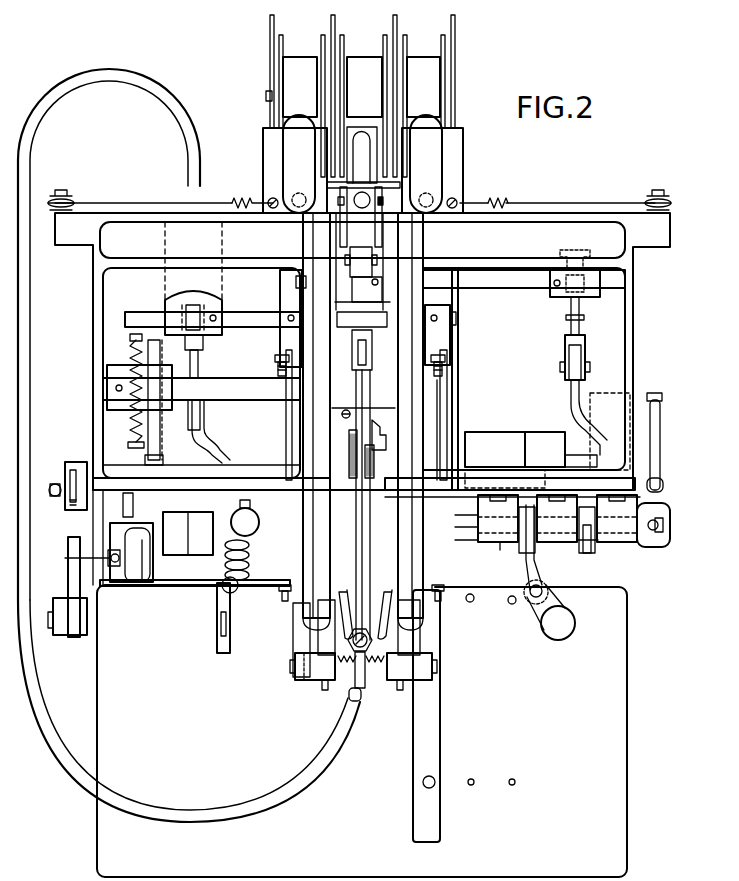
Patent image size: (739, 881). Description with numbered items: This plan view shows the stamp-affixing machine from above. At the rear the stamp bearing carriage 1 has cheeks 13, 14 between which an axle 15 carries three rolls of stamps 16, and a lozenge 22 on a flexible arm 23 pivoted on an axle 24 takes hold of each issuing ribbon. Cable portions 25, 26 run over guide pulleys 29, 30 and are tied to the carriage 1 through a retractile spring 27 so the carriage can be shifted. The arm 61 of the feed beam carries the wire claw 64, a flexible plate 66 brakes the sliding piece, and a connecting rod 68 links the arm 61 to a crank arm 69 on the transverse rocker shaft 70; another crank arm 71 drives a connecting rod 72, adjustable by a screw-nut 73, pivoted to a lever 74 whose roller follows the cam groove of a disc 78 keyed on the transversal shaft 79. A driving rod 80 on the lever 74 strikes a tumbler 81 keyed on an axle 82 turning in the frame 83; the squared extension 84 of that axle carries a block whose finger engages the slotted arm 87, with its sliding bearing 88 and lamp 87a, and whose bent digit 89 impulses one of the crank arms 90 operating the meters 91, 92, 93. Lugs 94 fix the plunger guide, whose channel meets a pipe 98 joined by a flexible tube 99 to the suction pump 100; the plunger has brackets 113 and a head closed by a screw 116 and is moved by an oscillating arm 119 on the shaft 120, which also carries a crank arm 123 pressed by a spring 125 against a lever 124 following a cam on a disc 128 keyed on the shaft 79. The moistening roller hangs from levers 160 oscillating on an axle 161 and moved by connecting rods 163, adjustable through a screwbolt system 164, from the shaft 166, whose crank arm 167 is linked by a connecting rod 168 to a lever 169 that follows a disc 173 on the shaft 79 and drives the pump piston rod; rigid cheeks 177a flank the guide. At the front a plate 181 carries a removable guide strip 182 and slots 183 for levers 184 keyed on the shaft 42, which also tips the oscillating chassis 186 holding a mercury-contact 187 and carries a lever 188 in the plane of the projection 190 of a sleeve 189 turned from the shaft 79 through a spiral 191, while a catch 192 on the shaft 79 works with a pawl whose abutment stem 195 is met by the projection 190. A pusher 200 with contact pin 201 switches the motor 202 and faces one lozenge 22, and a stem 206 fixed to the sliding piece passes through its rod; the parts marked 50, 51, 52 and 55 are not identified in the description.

The stamp bearing carriage 1 is at (274, 335).
The cheek 13 is at (270, 50).
The cheek 14 is at (456, 52).
The axle 15 is at (266, 96).
The rolls of stamps 16 is at (361, 87).
The lozenge 22 is at (299, 193).
The flexible arm 23 is at (362, 164).
The axle 24 is at (300, 120).
The cable portion 25 is at (106, 203).
The cable portion 26 is at (556, 203).
The retractile spring 27 is at (241, 200).
The guide pulley 29 is at (60, 194).
The guide pulley 30 is at (650, 196).
The shaft 42 is at (55, 615).
The bar 50 is at (226, 580).
The spring 51 is at (221, 551).
The spring 52 is at (223, 562).
The roller 55 is at (231, 512).
The arm 61 is at (361, 425).
The claw 64 is at (352, 465).
The flexible plate 66 is at (373, 422).
The connecting rod 68 is at (362, 306).
The crank arm 69 is at (368, 258).
The rocker shaft 70 is at (290, 280).
The crank arm 71 is at (584, 273).
The connecting rod 72 is at (585, 355).
The screw-nut 73 is at (585, 320).
The lever 74 is at (580, 390).
The disc 78 is at (597, 431).
The transversal shaft 79 is at (53, 486).
The driving rod 80 is at (648, 393).
The tumbler 81 is at (663, 485).
The axle 82 is at (658, 542).
The frame 83 is at (557, 480).
The squared extension 84 is at (486, 527).
The slotted arm 87 is at (530, 552).
The lamp 87a is at (558, 630).
The bearing 88 is at (486, 472).
The bent digit 89 is at (581, 555).
The crank arms 90 is at (526, 550).
The meter 91 is at (497, 551).
The meter 92 is at (555, 542).
The meter 93 is at (615, 542).
The lugs 94 is at (310, 490).
The pipe 98 is at (355, 702).
The flexible tube 99 is at (112, 68).
The suction pump 100 is at (193, 301).
The brackets 113 is at (316, 662).
The screw 116 is at (342, 663).
The oscillating arm 119 is at (357, 408).
The shaft 120 is at (201, 389).
The crank arm 123 is at (155, 432).
The lever 124 is at (152, 462).
The spring 125 is at (130, 425).
The disc 128 is at (188, 533).
The lever 160 is at (296, 645).
The axle 161 is at (290, 666).
The connecting rod 163 is at (288, 412).
The screwbolt system 164 is at (279, 358).
The shaft 166 is at (237, 320).
The crank arm 167 is at (180, 312).
The connecting rod 168 is at (210, 382).
The lever 169 is at (218, 442).
The disc 173 is at (207, 525).
The rigid cheeks 177a is at (323, 690).
The plate 181 is at (362, 731).
The strip of metal 182 is at (414, 760).
The slots 183 is at (217, 648).
The levers 184 is at (217, 627).
The oscillating chassis 186 is at (124, 575).
The mercury-contact 187 is at (142, 582).
The lever 188 is at (72, 590).
The sleeve 189 is at (76, 470).
The projection 190 is at (72, 506).
The spiral 191 is at (70, 500).
The catch 192 is at (128, 496).
The abutment stem 195 is at (67, 560).
The pusher 200 is at (383, 204).
The contact pin 201 is at (338, 204).
The motor 202 is at (247, 517).
The stem 206 is at (365, 133).